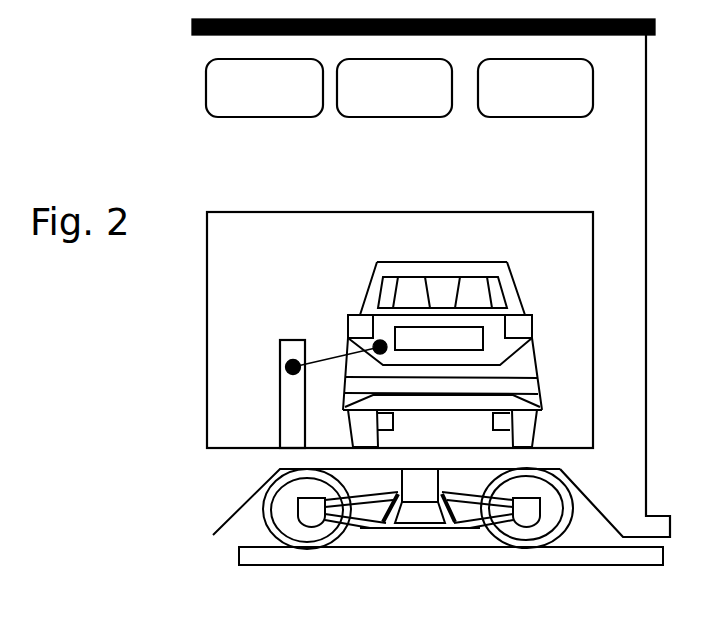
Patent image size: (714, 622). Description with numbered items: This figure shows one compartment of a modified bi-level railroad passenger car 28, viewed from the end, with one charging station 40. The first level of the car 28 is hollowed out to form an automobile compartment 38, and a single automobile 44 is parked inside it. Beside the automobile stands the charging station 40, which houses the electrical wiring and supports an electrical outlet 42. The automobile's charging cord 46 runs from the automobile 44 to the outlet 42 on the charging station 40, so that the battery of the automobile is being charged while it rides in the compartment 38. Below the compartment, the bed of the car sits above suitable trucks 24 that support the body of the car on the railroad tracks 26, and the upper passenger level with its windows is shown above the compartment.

The trucks 24 is at (424, 529).
The railroad tracks 26 is at (617, 556).
The modified bi-level railroad passenger car 28 is at (404, 175).
The automobile compartment 38 is at (400, 330).
The charging station 40 is at (280, 414).
The electrical outlet 42 is at (280, 367).
The automobile 44 is at (443, 268).
The automobile's charging cord 46 is at (325, 357).